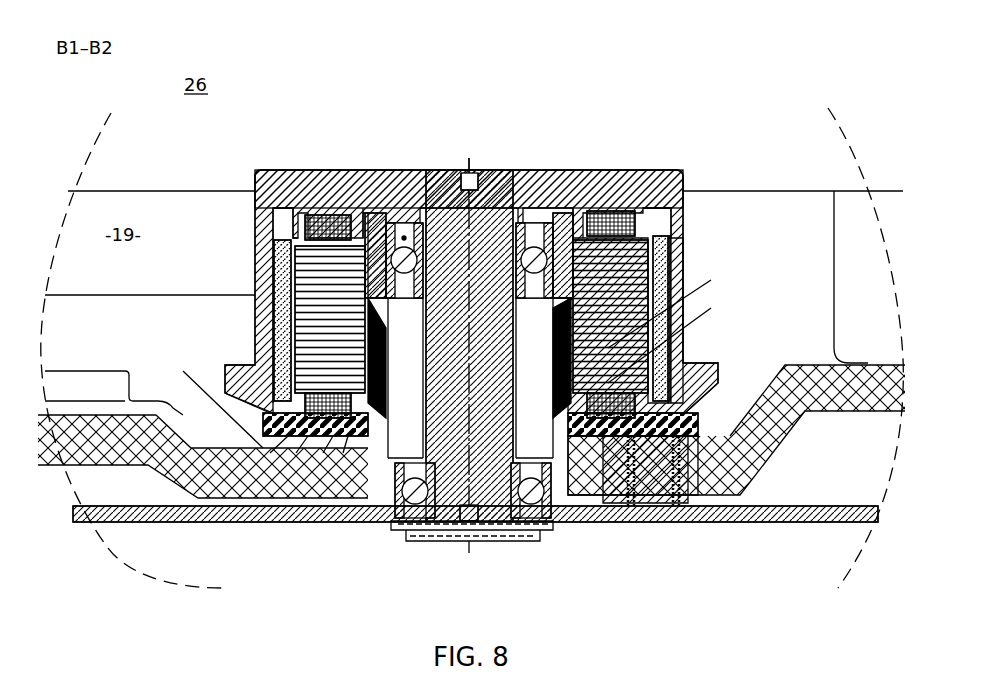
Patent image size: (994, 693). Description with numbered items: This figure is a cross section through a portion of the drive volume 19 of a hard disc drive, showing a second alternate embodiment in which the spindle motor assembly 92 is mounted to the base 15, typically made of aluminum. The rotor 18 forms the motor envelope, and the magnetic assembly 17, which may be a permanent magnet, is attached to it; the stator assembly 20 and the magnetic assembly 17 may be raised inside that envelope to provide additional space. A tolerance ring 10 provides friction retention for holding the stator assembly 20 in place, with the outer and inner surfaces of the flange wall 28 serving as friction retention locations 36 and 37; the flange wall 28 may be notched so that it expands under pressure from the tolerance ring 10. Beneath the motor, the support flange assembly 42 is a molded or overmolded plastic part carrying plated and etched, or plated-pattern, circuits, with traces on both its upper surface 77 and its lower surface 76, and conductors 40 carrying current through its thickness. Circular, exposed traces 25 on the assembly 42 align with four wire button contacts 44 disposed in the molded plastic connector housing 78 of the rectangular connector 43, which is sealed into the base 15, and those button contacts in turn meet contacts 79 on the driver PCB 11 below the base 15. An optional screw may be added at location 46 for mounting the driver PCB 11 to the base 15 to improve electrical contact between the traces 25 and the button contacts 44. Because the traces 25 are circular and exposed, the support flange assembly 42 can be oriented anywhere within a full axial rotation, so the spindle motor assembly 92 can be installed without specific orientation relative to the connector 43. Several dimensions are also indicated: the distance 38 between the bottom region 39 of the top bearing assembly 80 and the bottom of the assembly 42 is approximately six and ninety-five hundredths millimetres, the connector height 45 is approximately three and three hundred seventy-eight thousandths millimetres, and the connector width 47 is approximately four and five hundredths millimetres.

The tolerance ring 10 is at (676, 256).
The driver PCB 11 is at (827, 490).
The base 15 is at (807, 357).
The magnetic assembly 17 is at (268, 266).
The rotor 18 is at (552, 168).
The drive volume 19 is at (474, 319).
The stator assembly 20 is at (318, 250).
The traces 25 is at (342, 505).
The flange wall 28 is at (470, 349).
The friction retention location 36 is at (676, 286).
The friction retention location 37 is at (665, 330).
The distance 38 is at (232, 428).
The bottom region 39 is at (112, 417).
The conductors 40 is at (280, 505).
The support flange assembly 42 is at (318, 505).
The connector 43 is at (592, 508).
The wire button contacts 44 is at (622, 515).
The connector height 45 is at (700, 423).
The location 46 is at (779, 508).
The connector width 47 is at (683, 572).
The lower surface 76 is at (248, 505).
The upper surface 77 is at (247, 402).
The connector housing 78 is at (648, 500).
The contacts 79 is at (676, 508).
The top bearing assembly 80 is at (393, 228).
The spindle motor assembly 92 is at (686, 160).